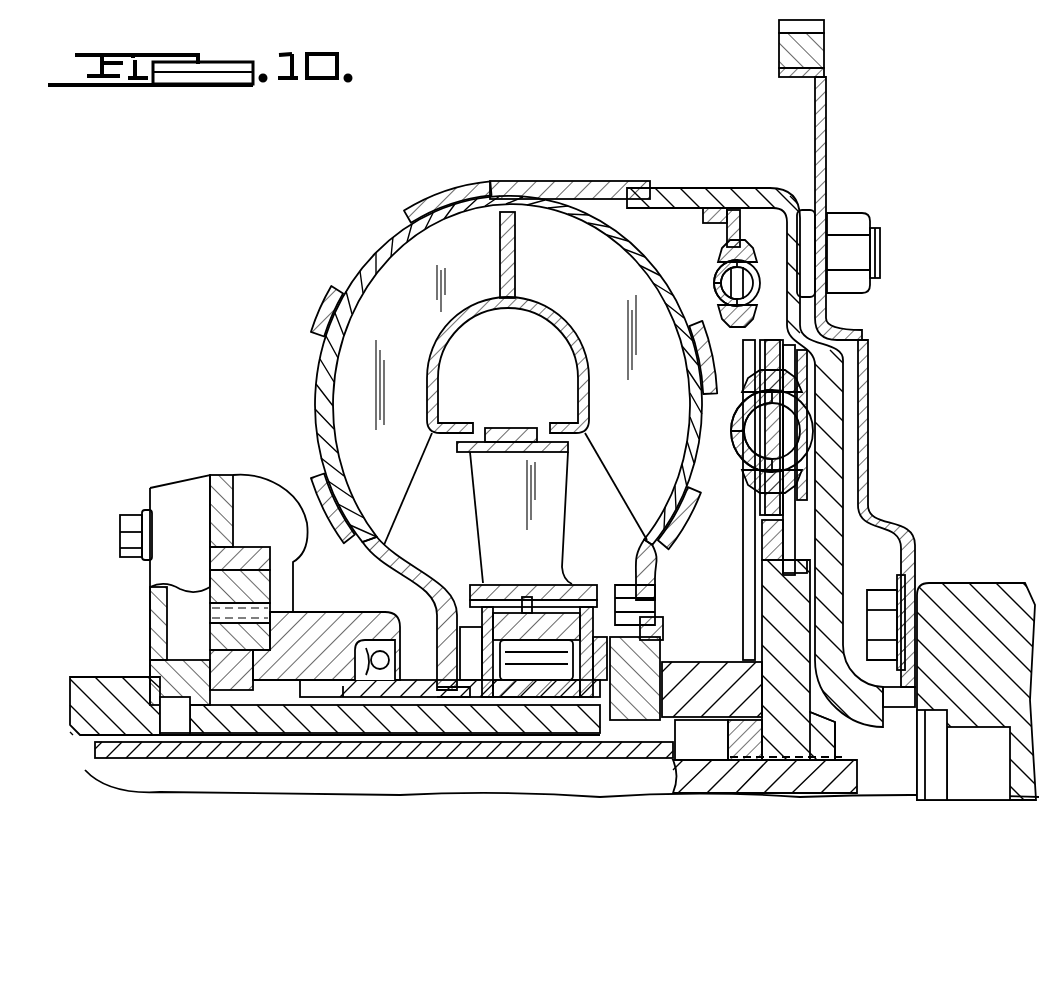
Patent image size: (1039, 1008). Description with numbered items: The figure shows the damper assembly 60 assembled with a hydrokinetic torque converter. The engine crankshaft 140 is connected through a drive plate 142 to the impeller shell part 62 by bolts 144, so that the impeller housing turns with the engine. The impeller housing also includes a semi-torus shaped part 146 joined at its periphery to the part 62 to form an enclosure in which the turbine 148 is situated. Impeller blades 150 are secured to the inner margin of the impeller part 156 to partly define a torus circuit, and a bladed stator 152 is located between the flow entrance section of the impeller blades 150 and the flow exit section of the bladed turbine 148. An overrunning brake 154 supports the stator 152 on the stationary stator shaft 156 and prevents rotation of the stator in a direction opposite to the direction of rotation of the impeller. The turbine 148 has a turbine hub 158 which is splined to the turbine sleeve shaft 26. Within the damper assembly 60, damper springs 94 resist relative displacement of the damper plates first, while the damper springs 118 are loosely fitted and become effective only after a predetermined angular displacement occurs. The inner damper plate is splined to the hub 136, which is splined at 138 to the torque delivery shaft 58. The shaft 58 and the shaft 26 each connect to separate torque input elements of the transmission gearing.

The turbine sleeve shaft 26 is at (492, 747).
The torque delivery shaft 58 is at (138, 778).
The damper assembly 60 is at (740, 538).
The impeller housing part 62 is at (680, 192).
The damper springs 94 is at (715, 272).
The damper springs 118 is at (810, 437).
The hub 136 is at (790, 612).
The spline 138 is at (822, 758).
The engine crankshaft 140 is at (950, 603).
The drive plate 142 is at (872, 405).
The bolts 144 is at (860, 235).
The semi-torus shaped part 146 is at (390, 238).
The turbine 148 is at (540, 240).
The impeller blades 150 is at (355, 375).
The bladed stator 152 is at (502, 470).
The overrunning brake 154 is at (537, 657).
The stationary stator shaft 156 is at (363, 720).
The turbine hub 158 is at (640, 727).